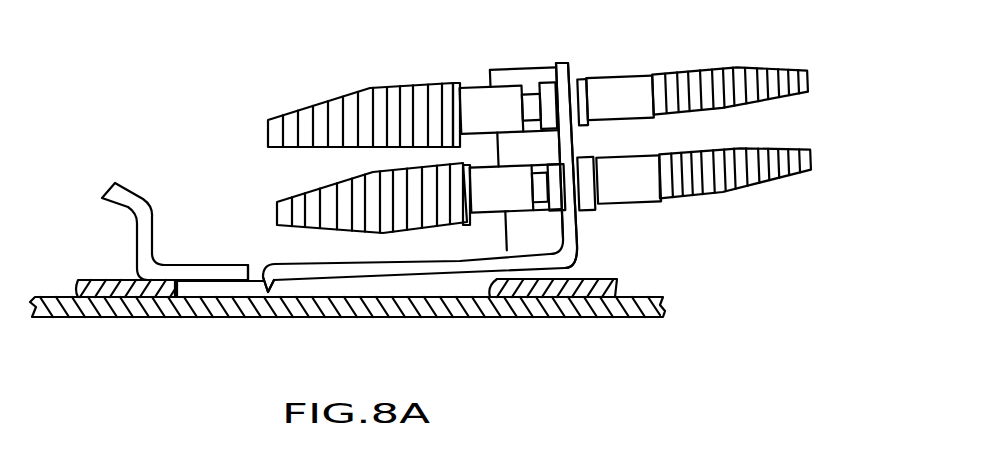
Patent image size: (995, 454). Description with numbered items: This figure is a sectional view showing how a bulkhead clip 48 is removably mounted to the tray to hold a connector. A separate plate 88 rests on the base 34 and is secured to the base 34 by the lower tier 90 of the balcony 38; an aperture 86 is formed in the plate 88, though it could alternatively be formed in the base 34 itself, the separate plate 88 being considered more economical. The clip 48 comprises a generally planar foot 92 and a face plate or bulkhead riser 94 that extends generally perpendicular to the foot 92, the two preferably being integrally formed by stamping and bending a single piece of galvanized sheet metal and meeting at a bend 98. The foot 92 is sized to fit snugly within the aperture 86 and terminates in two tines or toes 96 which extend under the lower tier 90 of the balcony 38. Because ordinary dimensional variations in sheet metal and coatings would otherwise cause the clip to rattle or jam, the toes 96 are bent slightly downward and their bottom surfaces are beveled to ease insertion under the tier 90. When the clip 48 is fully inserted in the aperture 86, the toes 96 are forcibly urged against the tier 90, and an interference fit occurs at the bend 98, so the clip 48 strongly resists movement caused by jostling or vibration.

The base 34 is at (273, 318).
The balcony 38 is at (130, 203).
The bulkhead clip 48 is at (519, 68).
The aperture 86 is at (612, 282).
The plate 88 is at (107, 283).
The lower tier 90 is at (188, 267).
The foot 92 is at (383, 263).
The bulkhead riser 94 is at (567, 145).
The toes 96 is at (271, 279).
The bend 98 is at (583, 249).